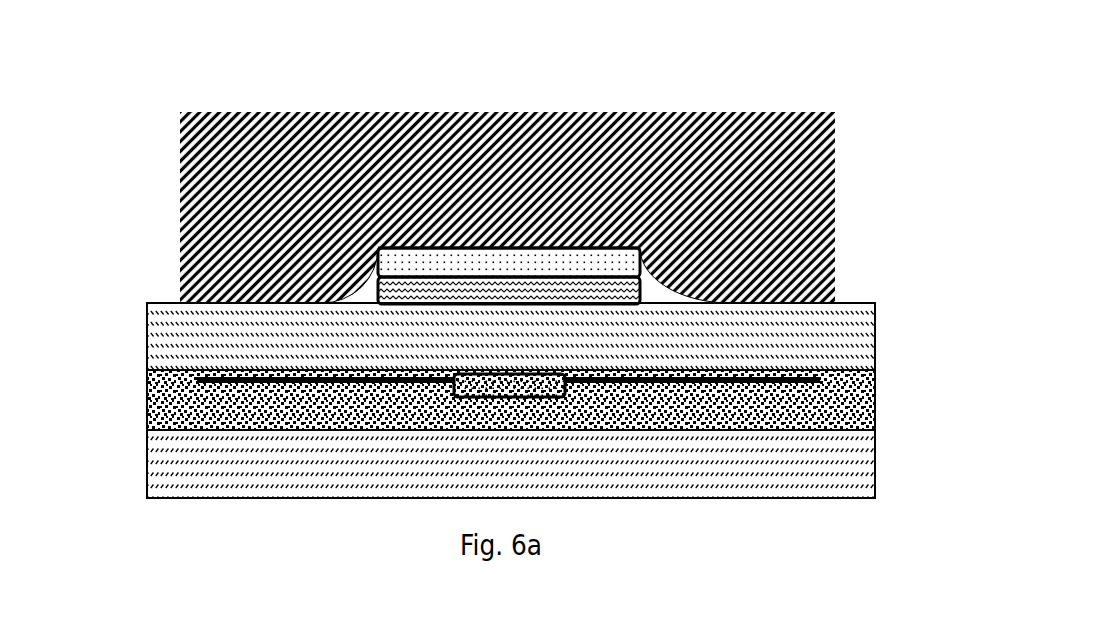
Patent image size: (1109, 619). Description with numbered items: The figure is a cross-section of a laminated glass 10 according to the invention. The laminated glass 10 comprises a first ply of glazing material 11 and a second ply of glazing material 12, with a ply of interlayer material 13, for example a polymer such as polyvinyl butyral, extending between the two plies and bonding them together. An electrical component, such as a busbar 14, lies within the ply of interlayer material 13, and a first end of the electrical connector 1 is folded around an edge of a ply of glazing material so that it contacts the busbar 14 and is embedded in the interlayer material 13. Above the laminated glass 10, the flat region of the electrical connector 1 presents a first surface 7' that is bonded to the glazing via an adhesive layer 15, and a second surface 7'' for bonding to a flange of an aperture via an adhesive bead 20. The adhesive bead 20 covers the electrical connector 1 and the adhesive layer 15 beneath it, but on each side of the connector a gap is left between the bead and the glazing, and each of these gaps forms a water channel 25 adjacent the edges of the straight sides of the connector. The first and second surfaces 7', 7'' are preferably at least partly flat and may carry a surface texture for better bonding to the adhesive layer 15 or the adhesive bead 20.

The electrical connector 1 is at (503, 262).
The first surface 7' is at (466, 152).
The second surface 7'' is at (500, 138).
The laminated glass 10 is at (140, 282).
The first ply of glazing material 11 is at (146, 465).
The second ply of glazing material 12 is at (146, 338).
The ply of interlayer material 13 is at (146, 400).
The busbar 14 is at (822, 397).
The adhesive layer 15 is at (563, 300).
The adhesive bead 20 is at (181, 112).
The water channel 25 is at (363, 288).